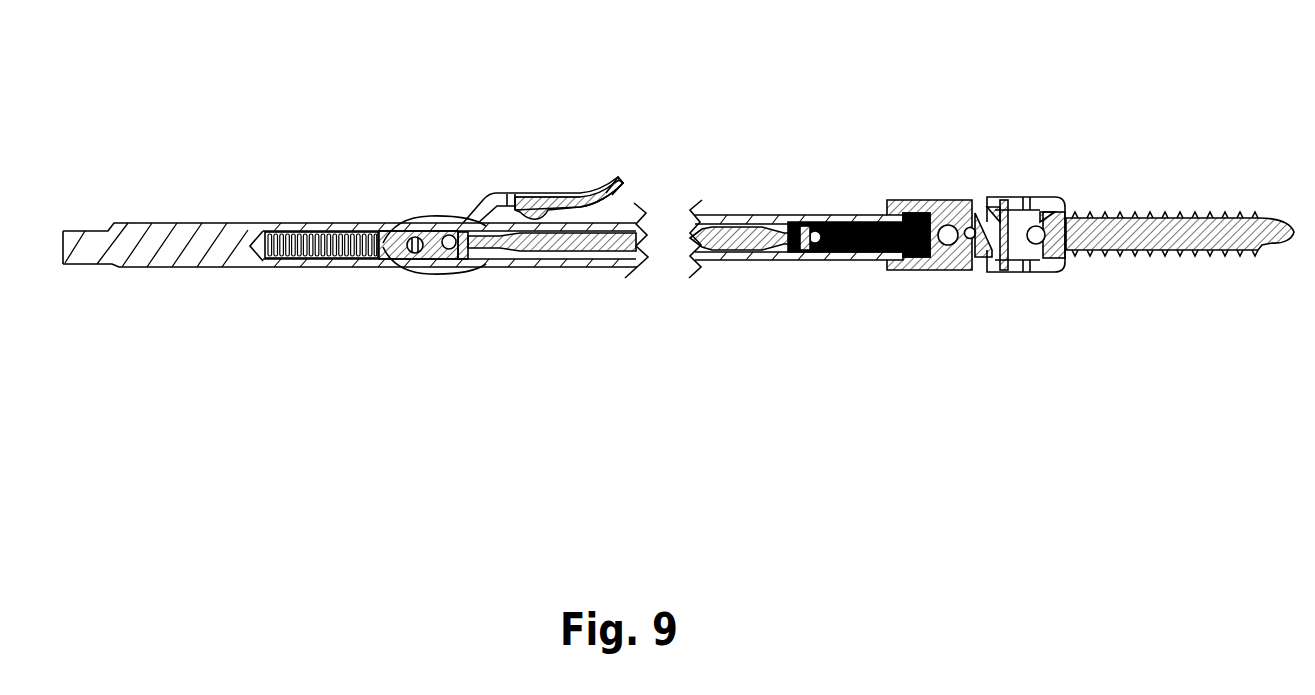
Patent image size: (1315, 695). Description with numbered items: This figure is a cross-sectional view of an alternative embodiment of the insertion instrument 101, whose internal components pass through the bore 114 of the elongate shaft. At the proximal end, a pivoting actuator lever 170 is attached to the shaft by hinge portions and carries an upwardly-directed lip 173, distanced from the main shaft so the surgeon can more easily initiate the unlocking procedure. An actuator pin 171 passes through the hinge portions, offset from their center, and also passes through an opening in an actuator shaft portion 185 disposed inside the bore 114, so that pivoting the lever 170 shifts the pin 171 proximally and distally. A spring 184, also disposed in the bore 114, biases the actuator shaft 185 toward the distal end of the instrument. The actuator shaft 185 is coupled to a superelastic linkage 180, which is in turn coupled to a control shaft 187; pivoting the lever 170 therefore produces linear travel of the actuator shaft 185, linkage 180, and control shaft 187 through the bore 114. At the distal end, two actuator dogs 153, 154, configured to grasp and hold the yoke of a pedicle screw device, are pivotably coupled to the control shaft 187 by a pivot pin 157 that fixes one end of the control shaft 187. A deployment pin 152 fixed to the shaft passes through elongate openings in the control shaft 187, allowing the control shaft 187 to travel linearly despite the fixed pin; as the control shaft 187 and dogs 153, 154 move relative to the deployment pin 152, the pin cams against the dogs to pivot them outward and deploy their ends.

The insertion instrument 101 is at (738, 90).
The bore 114 is at (612, 260).
The deployment pin 152 is at (972, 242).
The actuator dog 153 is at (980, 207).
The actuator dog 154 is at (988, 262).
The pivot pin 157 is at (946, 244).
The actuator lever 170 is at (530, 190).
The actuator pin 171 is at (415, 262).
The upwardly-directed lip 173 is at (612, 187).
The superelastic linkage 180 is at (563, 255).
The spring 184 is at (330, 230).
The actuator shaft portion 185 is at (433, 228).
The control shaft 187 is at (847, 256).